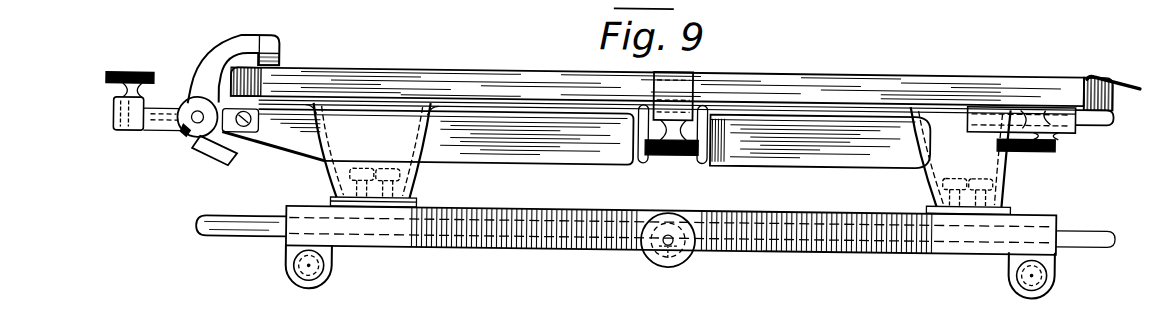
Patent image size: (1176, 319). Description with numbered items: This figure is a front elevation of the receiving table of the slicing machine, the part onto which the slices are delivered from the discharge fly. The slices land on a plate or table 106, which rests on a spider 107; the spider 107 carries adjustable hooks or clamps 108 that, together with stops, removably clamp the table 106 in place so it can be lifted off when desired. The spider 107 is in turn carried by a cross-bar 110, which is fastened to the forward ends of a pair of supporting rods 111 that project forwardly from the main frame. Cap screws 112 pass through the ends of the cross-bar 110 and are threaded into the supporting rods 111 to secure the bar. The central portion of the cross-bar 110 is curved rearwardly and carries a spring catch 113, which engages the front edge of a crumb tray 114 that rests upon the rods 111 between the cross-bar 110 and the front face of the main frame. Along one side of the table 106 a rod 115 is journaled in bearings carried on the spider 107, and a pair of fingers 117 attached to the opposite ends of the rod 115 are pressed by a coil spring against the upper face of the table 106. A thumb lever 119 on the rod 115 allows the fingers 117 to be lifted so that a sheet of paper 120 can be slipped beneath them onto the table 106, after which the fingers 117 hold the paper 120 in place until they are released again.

The plate or table 106 is at (850, 86).
The spider 107 is at (592, 151).
The adjustable hooks or clamps 108 is at (683, 88).
The cross-bar 110 is at (775, 249).
The supporting rods 111 is at (337, 266).
The cap screws 112 is at (326, 279).
The spring catch 113 is at (670, 267).
The crumb tray 114 is at (262, 238).
The rod 115 is at (193, 131).
The fingers 117 is at (215, 63).
The thumb lever 119 is at (118, 77).
The sheet of paper 120 is at (1128, 74).